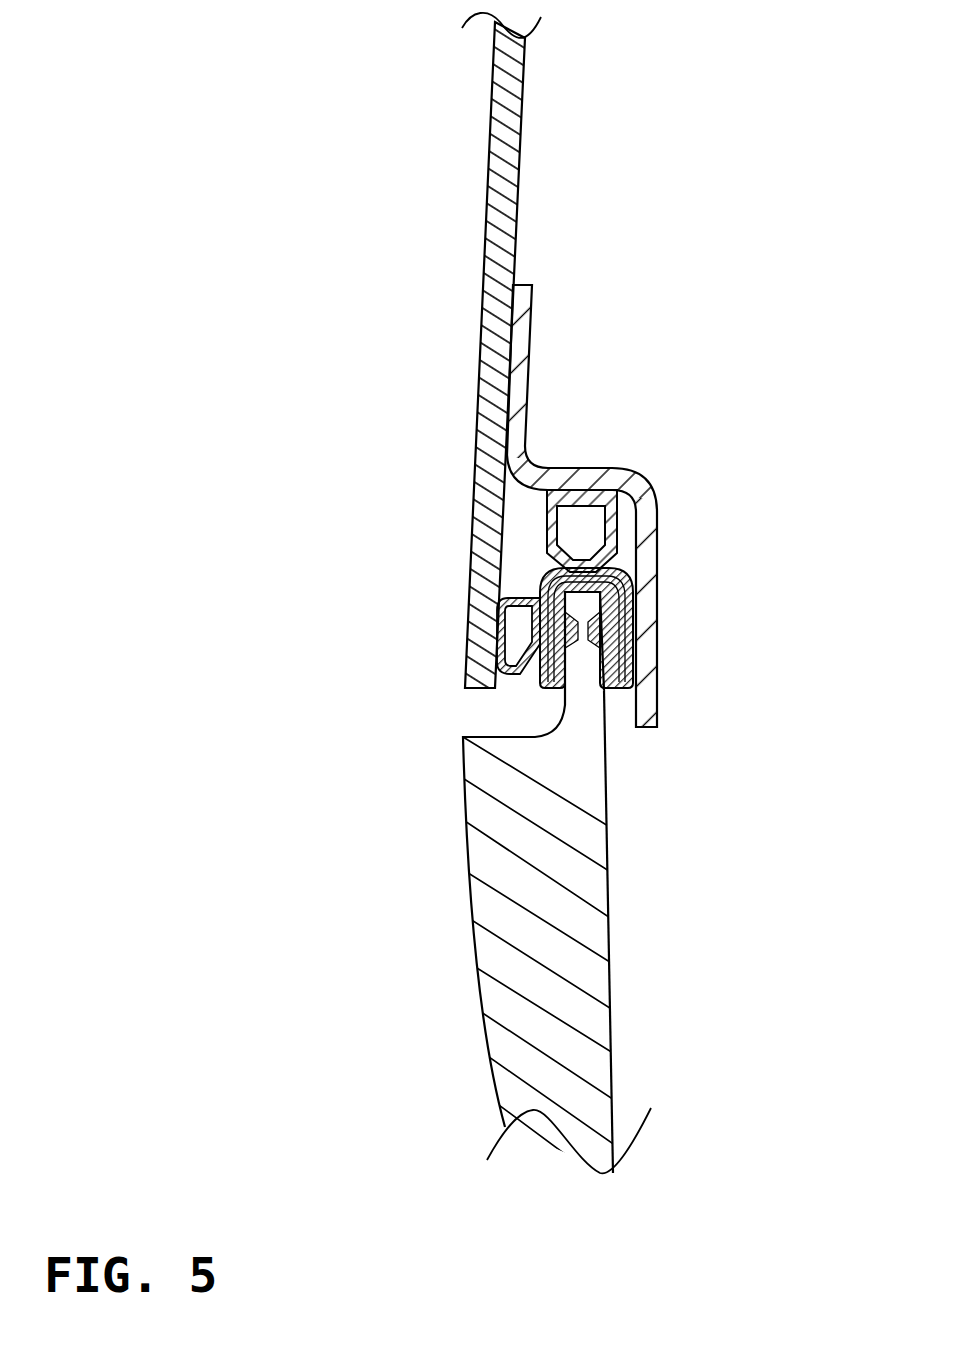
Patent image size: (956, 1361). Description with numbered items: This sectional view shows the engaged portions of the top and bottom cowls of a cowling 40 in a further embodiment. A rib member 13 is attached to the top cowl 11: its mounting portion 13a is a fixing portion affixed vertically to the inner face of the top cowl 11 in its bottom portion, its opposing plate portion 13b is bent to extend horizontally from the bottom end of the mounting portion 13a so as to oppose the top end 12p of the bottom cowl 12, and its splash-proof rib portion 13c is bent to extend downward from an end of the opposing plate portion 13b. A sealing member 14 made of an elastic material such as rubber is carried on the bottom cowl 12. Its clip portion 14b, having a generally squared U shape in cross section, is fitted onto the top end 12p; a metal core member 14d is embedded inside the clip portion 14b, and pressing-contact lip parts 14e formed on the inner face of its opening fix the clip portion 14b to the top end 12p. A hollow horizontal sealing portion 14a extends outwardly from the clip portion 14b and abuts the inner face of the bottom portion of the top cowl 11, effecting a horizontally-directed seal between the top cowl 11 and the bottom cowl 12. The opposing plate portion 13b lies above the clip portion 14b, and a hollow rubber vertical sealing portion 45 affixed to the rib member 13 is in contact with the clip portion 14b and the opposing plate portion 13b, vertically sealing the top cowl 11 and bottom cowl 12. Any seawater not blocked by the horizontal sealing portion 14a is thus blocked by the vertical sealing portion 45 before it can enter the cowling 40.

The cowling 40 is at (398, 170).
The top cowl 11 is at (492, 292).
The bottom cowl 12 is at (578, 920).
The top end 12p is at (583, 705).
The rib member 13 is at (678, 505).
The mounting portion 13a is at (523, 333).
The opposing plate portion 13b is at (558, 468).
The splash-proof rib portion 13c is at (640, 630).
The vertical sealing portion 45 is at (622, 520).
The sealing member 14 is at (568, 615).
The horizontal sealing portion 14a is at (498, 605).
The clip portion 14b is at (625, 668).
The metal core member 14d is at (553, 582).
The pressing-contact lip parts 14e is at (633, 610).